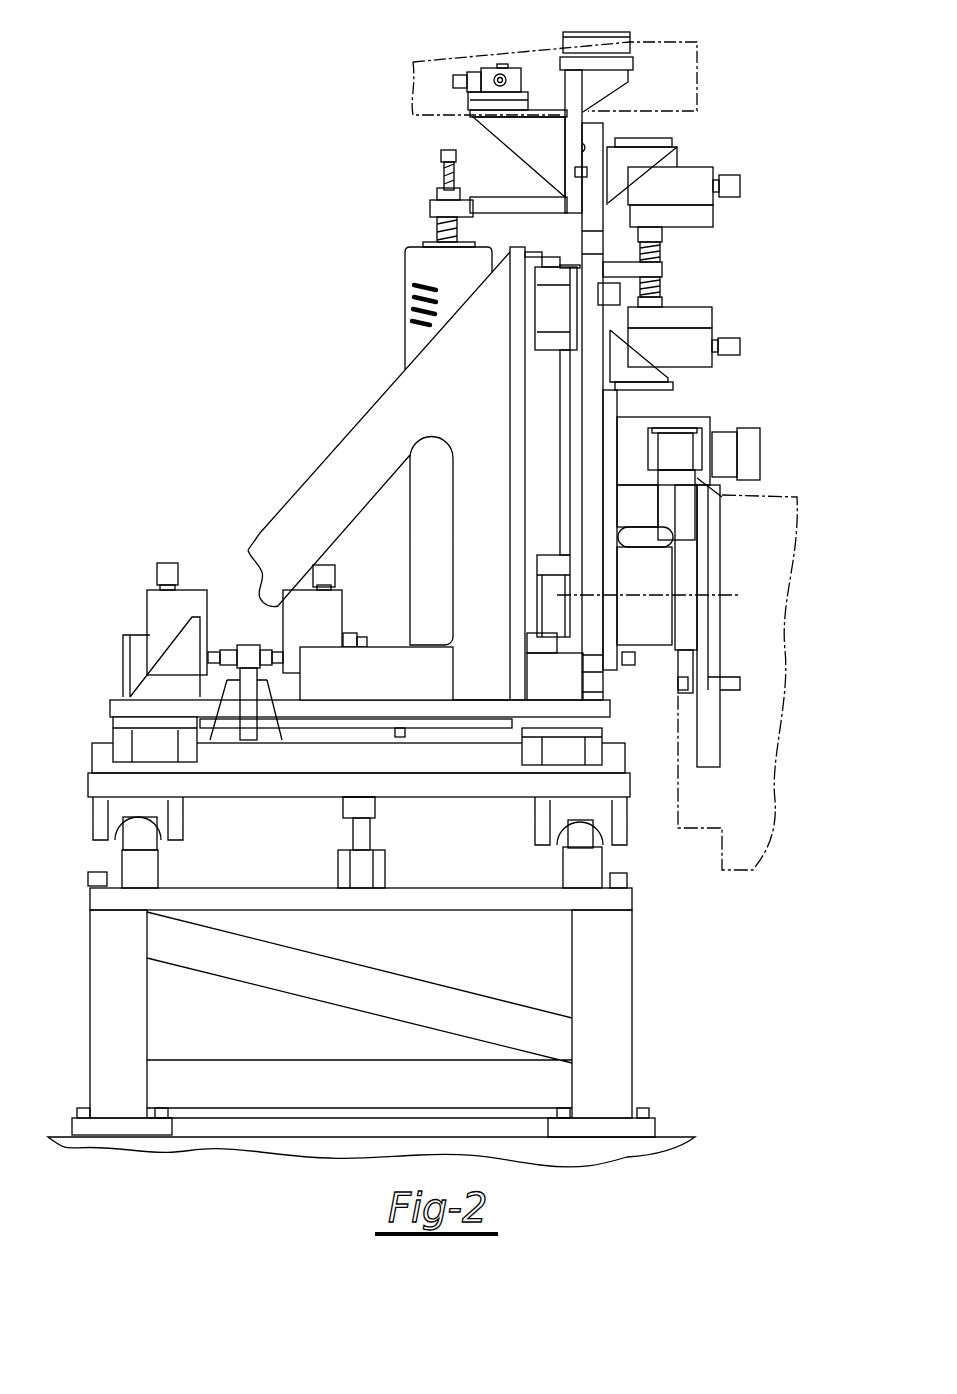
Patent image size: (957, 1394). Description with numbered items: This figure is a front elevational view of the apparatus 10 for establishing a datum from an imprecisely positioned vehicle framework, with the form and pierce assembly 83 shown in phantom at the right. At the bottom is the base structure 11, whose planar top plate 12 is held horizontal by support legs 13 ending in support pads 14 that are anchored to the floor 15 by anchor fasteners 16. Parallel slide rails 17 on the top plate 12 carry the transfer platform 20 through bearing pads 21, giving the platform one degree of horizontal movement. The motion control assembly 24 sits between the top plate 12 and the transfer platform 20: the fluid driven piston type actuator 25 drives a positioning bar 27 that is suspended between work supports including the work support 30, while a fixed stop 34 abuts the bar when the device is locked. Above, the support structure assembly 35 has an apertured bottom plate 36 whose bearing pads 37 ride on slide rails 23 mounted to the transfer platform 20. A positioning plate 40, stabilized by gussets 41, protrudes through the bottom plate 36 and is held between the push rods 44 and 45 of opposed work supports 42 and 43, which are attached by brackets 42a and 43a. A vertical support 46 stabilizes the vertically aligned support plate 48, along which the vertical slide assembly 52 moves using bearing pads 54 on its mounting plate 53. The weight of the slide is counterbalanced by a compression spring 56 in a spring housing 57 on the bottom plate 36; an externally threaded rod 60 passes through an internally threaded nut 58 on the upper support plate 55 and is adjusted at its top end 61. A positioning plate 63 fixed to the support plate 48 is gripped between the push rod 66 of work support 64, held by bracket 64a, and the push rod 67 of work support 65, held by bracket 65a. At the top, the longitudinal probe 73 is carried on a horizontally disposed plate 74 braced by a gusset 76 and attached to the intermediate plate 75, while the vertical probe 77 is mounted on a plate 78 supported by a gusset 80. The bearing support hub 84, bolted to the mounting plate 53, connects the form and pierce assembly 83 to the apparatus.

The apparatus 10 is at (760, 142).
The base structure 11 is at (90, 997).
The planar top plate 12 is at (90, 902).
The support legs 13 is at (632, 985).
The support pads 14 is at (657, 1125).
The floor 15 is at (593, 1153).
The anchor fasteners 16 is at (642, 1108).
The slide rails 17 is at (123, 858).
The transfer platform 20 is at (88, 785).
The bearing pads 21 is at (93, 812).
The slide rails 23 is at (92, 748).
The motion control assembly 24 is at (383, 837).
The fluid driven piston type actuator 25 is at (388, 872).
The positioning bar 27 is at (353, 833).
The work support 30 is at (343, 808).
The fixed stop 34 is at (348, 890).
The support structure assembly 35 is at (317, 455).
The apertured bottom plate 36 is at (110, 705).
The bearing pads 37 is at (113, 735).
The positioning plate 40 is at (243, 647).
The gussets 41 is at (283, 727).
The work support 42 is at (147, 600).
The bracket 42a is at (125, 665).
The work support 43 is at (343, 607).
The bracket 43a is at (347, 633).
The push rod 44 is at (228, 647).
The push rod 45 is at (262, 668).
The vertical support 46 is at (445, 415).
The support plate 48 is at (508, 445).
The vertical slide assembly 52 is at (690, 267).
The mounting plate 53 is at (610, 402).
The bearing pads 54 is at (547, 350).
The upper support plate 55 is at (505, 197).
The compression spring 56 is at (412, 303).
The spring housing 57 is at (405, 262).
The internally threaded nut 58 is at (457, 217).
The externally threaded rod 60 is at (443, 180).
The top end 61 is at (441, 155).
The positioning plate 63 is at (663, 273).
The work support 64 is at (693, 167).
The bracket 64a is at (663, 137).
The work support 65 is at (710, 372).
The bracket 65a is at (680, 385).
The push rod 66 is at (660, 233).
The push rod 67 is at (672, 308).
The longitudinal probe 73 is at (490, 68).
The horizontally disposed plate 74 is at (541, 100).
The intermediate plate 75 is at (580, 153).
The gusset 76 is at (480, 133).
The vertical probe 77 is at (603, 33).
The plate 78 is at (635, 62).
The gusset 80 is at (610, 95).
The form and pierce assembly 83 is at (803, 535).
The bearing support hub 84 is at (653, 647).